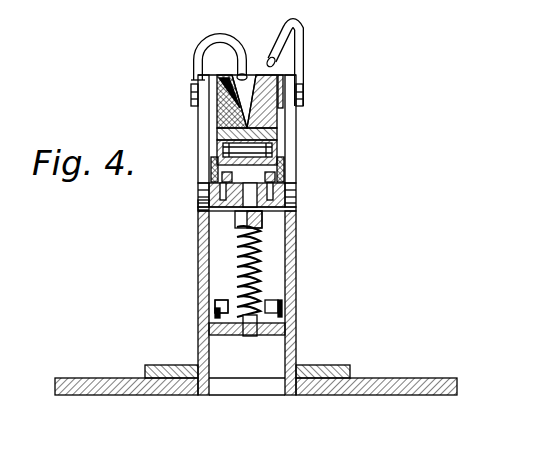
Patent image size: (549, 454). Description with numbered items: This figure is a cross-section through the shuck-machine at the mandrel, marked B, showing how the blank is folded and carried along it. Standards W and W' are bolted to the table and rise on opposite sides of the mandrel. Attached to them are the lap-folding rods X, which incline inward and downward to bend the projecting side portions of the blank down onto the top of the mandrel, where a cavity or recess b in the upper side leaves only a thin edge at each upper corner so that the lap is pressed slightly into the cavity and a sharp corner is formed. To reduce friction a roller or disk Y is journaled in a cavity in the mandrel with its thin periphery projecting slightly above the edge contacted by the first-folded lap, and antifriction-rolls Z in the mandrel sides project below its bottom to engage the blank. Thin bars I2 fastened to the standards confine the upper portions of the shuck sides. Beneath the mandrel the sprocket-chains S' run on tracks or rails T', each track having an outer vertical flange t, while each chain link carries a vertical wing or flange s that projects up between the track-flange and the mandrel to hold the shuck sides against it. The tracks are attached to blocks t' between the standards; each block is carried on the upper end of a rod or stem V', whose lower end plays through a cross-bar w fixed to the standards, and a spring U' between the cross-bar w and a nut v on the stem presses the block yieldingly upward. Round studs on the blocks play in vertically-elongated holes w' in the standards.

The roller or disk Y is at (238, 100).
The lap-folding rod X is at (285, 43).
The thin bar I2 is at (333, 91).
The valve body B is at (277, 115).
The cavity or recess b is at (244, 101).
The antifriction-roll Z is at (278, 133).
The vertical flange t is at (244, 154).
The vertical wing or flange s is at (213, 170).
The sprocket-chain S' is at (264, 240).
The vertically-elongated hole w' is at (249, 191).
The block t' is at (173, 215).
The track or rail T' is at (270, 216).
The nut v is at (235, 218).
The standard W is at (182, 303).
The standard W' is at (310, 303).
The spring U' is at (293, 281).
The rod or stem V' is at (199, 300).
The cross-bar w is at (256, 359).